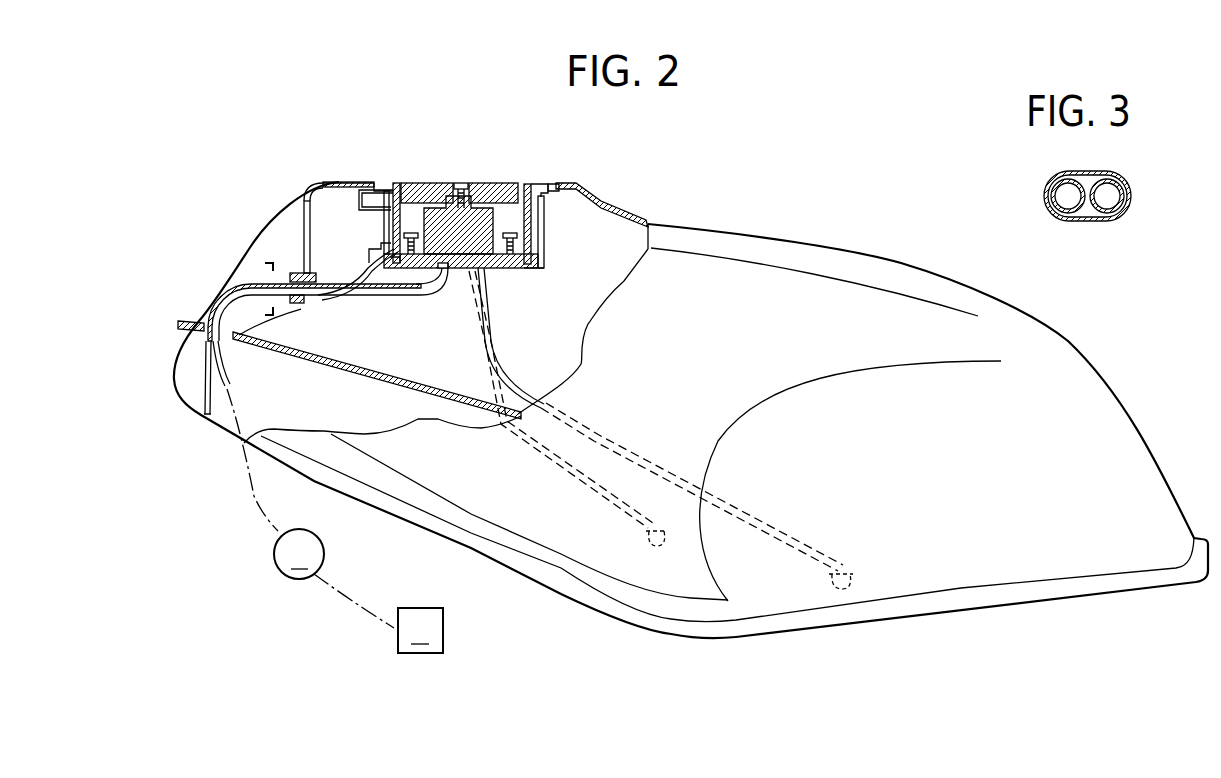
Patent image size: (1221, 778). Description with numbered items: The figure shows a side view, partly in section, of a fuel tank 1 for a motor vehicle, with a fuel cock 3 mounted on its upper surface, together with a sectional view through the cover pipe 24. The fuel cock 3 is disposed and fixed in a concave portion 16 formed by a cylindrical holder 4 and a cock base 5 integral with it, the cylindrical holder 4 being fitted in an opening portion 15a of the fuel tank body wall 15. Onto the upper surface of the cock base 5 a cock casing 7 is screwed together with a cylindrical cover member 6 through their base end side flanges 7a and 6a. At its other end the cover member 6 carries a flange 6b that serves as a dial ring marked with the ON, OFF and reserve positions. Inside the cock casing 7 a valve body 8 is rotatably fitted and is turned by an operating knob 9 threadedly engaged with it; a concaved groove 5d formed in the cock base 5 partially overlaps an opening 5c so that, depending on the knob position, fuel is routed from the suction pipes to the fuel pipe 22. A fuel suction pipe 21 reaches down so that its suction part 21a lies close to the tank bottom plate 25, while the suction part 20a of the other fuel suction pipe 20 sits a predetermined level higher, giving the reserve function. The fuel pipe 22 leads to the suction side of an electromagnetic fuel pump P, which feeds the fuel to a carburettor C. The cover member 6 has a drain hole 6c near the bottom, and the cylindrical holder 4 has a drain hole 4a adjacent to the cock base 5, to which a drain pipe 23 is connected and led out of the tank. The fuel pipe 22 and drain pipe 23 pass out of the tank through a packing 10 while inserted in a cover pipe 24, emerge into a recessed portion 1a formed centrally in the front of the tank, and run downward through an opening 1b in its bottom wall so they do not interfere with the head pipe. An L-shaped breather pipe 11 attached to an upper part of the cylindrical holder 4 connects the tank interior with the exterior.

In FIG. 2, the fuel tank 1 is at (766, 349).
In FIG. 2, the recessed portion 1a is at (280, 312).
In FIG. 2, the opening 1b is at (200, 318).
In FIG. 2, the fuel cock 3 is at (432, 160).
In FIG. 2, the cylindrical holder 4 is at (537, 222).
In FIG. 2, the drain hole 4a is at (395, 265).
In FIG. 2, the cock base 5 is at (530, 265).
In FIG. 2, the opening 5c is at (440, 272).
In FIG. 2, the concaved groove 5d is at (445, 268).
In FIG. 2, the cover member 6 is at (535, 208).
In FIG. 2, the base end side flange 6a is at (527, 243).
In FIG. 2, the flange 6b is at (541, 183).
In FIG. 2, the drain hole 6c is at (375, 244).
In FIG. 2, the cock casing 7 is at (392, 232).
In FIG. 2, the base end side flange 7a is at (520, 251).
In FIG. 2, the valve body 8 is at (495, 260).
In FIG. 2, the operating knob 9 is at (476, 182).
In FIG. 2, the packing 10 is at (290, 272).
In FIG. 2, the L-shaped breather pipe 11 is at (337, 181).
In FIG. 2, the fuel tank body wall 15 is at (625, 212).
In FIG. 2, the opening portion 15a is at (556, 184).
In FIG. 2, the concave portion 16 is at (350, 195).
In FIG. 2, the fuel suction pipe 20 is at (478, 368).
In FIG. 2, the suction part 20a is at (662, 538).
In FIG. 2, the fuel suction pipe 21 is at (500, 365).
In FIG. 2, the suction part 21a is at (850, 578).
In FIG. 2, the fuel pipe 22 is at (226, 375).
In FIG. 3, the fuel pipe 22 is at (1052, 212).
In FIG. 2, the drain pipe 23 is at (203, 415).
In FIG. 3, the drain pipe 23 is at (1124, 210).
In FIG. 2, the cover pipe 24 is at (247, 285).
In FIG. 3, the cover pipe 24 is at (1090, 221).
In FIG. 2, the tank bottom plate 25 is at (905, 590).
In FIG. 2, the electromagnetic type fuel pump P is at (275, 484).
In FIG. 2, the carburettor C is at (378, 613).